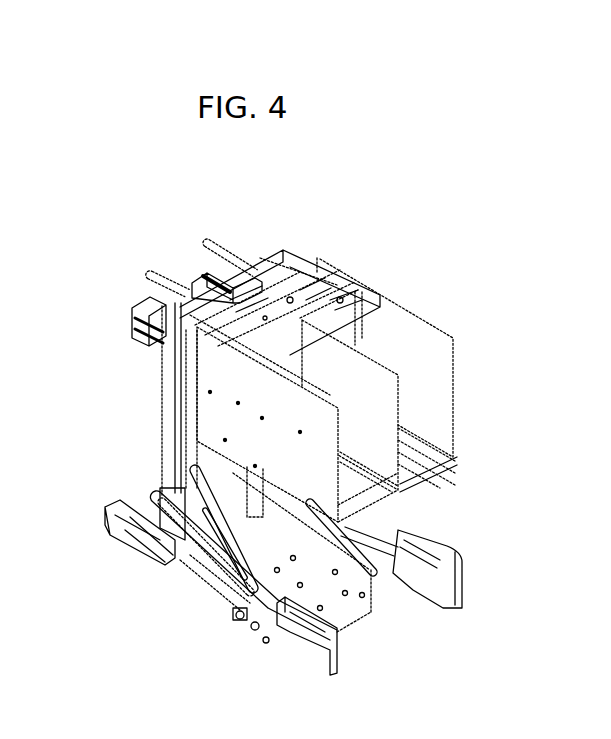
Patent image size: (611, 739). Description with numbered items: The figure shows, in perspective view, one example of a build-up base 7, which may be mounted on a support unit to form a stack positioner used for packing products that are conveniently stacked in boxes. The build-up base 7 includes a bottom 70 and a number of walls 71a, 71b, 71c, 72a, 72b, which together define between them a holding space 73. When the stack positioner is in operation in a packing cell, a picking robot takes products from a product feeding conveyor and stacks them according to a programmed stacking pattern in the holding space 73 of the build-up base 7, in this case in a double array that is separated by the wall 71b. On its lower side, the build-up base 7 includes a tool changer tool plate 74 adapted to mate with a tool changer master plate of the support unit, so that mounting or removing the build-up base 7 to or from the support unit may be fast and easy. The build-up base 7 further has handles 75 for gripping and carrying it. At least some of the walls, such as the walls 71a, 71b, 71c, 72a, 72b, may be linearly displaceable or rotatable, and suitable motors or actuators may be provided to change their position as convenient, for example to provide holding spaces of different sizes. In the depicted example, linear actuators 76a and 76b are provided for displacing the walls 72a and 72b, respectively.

The build-up base 7 is at (308, 213).
The bottom 70 is at (427, 477).
The wall 71a is at (275, 418).
The wall 71b is at (367, 387).
The wall 71c is at (432, 360).
The wall 72a is at (283, 360).
The wall 72b is at (345, 322).
The holding space 73 is at (366, 451).
The tool changer tool plate 74 is at (358, 635).
The handles 75 is at (237, 617).
The linear actuator 76a is at (140, 312).
The linear actuator 76b is at (202, 277).